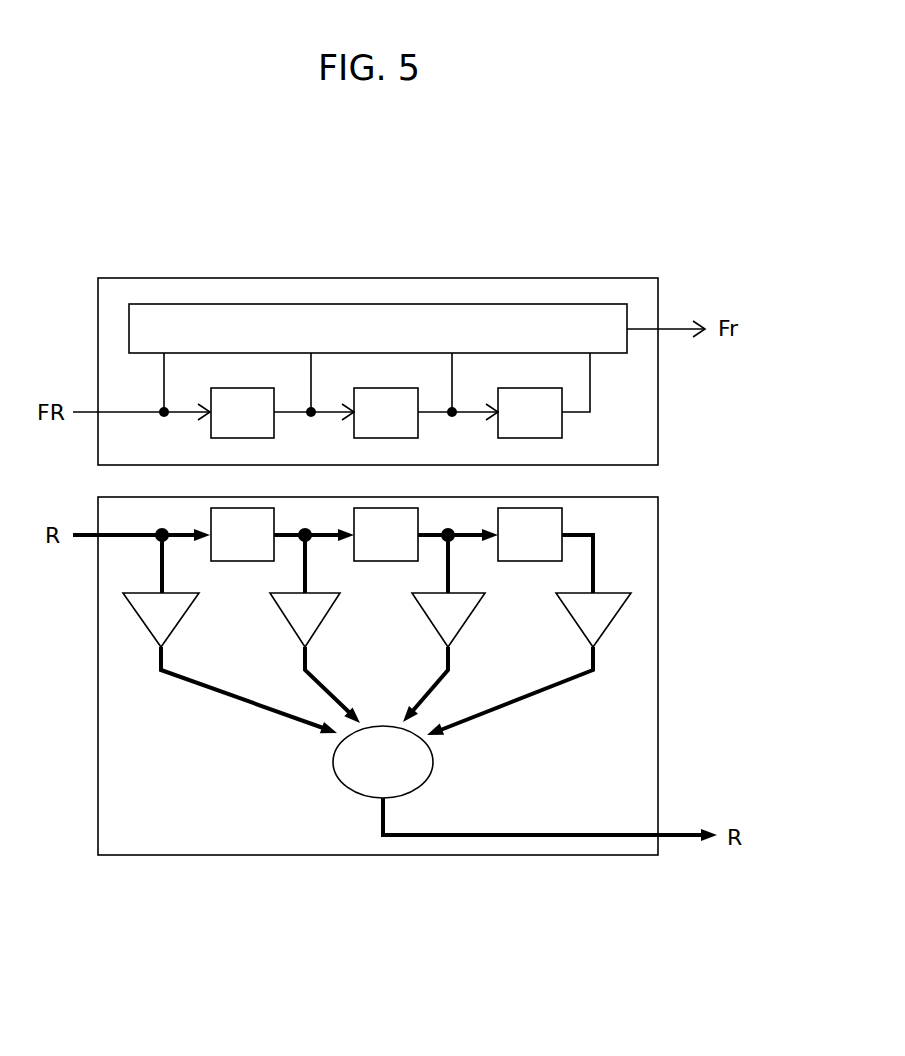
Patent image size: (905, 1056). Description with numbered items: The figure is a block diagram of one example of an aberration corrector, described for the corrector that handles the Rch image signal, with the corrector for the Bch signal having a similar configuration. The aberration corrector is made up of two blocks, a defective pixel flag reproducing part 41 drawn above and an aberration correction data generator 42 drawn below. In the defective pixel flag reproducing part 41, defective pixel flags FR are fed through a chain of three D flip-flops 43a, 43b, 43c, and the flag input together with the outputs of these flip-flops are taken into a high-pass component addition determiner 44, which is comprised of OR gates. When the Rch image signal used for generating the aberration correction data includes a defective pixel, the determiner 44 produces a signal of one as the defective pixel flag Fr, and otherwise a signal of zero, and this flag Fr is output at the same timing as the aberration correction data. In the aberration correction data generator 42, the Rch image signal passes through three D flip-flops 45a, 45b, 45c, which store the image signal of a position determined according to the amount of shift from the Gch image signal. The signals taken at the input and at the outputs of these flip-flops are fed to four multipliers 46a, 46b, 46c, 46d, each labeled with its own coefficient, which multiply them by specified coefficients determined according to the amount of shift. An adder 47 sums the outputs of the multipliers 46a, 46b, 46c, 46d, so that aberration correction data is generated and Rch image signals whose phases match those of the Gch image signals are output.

The defective pixel flag reproducing part 41 is at (613, 277).
The aberration correction data generator 42 is at (549, 855).
The D flip-flop 43a is at (262, 438).
The D flip-flop 43b is at (403, 438).
The D flip-flop 43c is at (550, 438).
The high-pass component addition determiner 44 is at (325, 303).
The D flip-flop 45a is at (252, 508).
The D flip-flop 45b is at (398, 508).
The D flip-flop 45c is at (543, 508).
The multiplier 46a is at (143, 618).
The multiplier 46b is at (285, 618).
The multiplier 46c is at (423, 617).
The multiplier 46d is at (570, 617).
The adder 47 is at (335, 778).